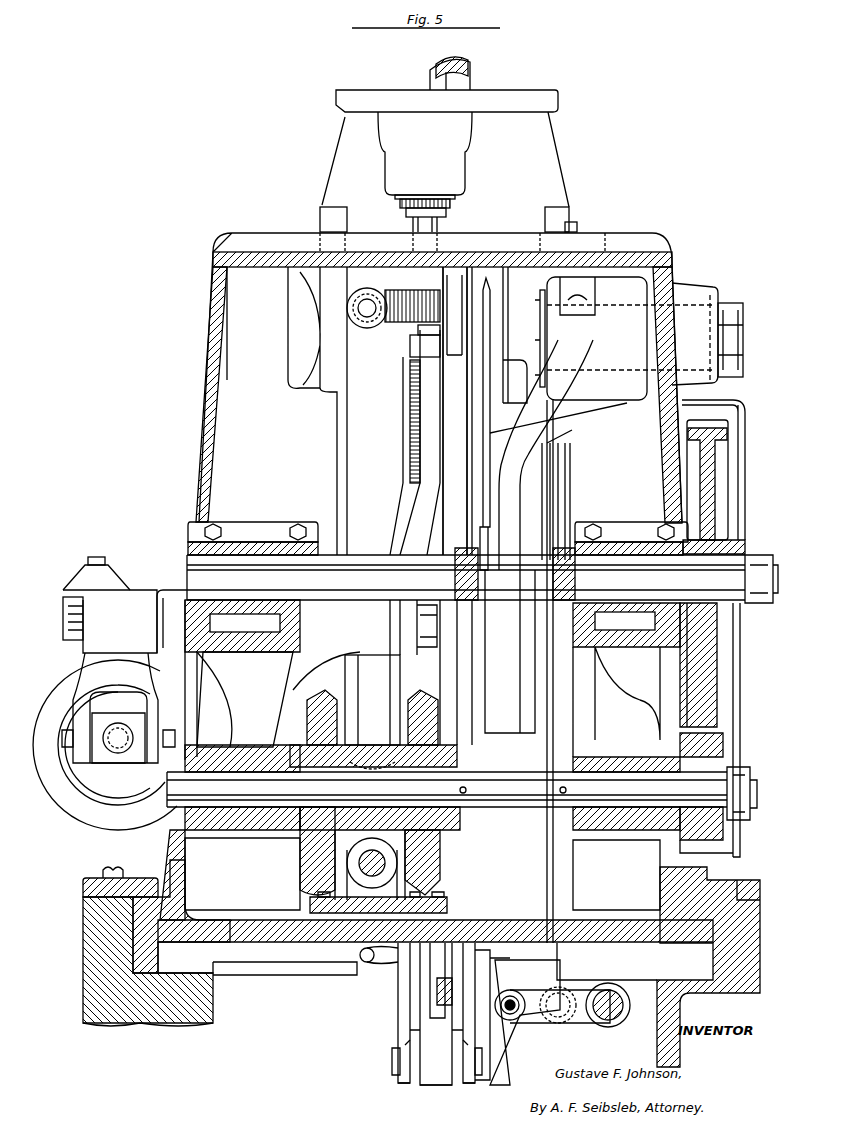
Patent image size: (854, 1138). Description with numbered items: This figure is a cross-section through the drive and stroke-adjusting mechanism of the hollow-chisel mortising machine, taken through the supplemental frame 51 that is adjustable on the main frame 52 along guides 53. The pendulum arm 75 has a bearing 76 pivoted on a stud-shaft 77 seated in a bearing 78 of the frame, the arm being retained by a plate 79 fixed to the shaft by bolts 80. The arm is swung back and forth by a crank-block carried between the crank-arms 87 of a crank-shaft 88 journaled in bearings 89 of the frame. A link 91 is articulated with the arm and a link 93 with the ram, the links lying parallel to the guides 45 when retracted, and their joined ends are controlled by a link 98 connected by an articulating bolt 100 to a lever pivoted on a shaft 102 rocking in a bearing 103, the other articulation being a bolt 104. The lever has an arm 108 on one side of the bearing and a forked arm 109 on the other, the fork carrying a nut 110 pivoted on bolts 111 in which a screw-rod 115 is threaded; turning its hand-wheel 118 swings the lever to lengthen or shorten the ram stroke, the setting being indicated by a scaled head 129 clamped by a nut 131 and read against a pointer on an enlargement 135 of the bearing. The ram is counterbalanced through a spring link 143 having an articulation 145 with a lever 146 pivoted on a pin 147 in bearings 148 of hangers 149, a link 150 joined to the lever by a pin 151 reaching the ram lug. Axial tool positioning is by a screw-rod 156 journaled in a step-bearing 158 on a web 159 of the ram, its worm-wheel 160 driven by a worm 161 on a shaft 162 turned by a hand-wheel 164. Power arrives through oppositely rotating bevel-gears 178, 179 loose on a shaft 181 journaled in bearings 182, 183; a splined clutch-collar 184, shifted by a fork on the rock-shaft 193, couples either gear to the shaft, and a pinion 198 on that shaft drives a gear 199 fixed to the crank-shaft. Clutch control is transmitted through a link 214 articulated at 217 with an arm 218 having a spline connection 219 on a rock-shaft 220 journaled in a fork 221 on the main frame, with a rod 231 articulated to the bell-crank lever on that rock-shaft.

The guides 45 is at (325, 218).
The supplemental frame 51 is at (674, 262).
The main frame 52 is at (83, 978).
The guides 53 is at (186, 975).
The arm 75 is at (508, 487).
The bearing 76 is at (634, 385).
The stud-shaft 77 is at (745, 332).
The bearing 78 is at (698, 290).
The plate 79 is at (540, 335).
The bolts 80 is at (538, 360).
The crank-arms 87 is at (462, 548).
The crank-shaft 88 is at (386, 563).
The bearings 89 is at (283, 540).
The link 91 is at (503, 406).
The link 93 is at (475, 432).
The link 98 is at (450, 362).
The articulating bolt 100 is at (425, 285).
The shaft 102 is at (63, 627).
The bearing 103 is at (172, 600).
The articulating bolt 104 is at (415, 350).
The arm 108 is at (420, 465).
The arm 109 is at (84, 666).
The nut 110 is at (107, 750).
The bolts 111 is at (60, 742).
The screw-rod 115 is at (128, 752).
The hand-wheel 118 is at (80, 822).
The head 129 is at (90, 582).
The nut 131 is at (105, 561).
The enlargement 135 is at (63, 605).
The link 143 is at (430, 1012).
The articulation 145 is at (415, 988).
The lever 146 is at (436, 1085).
The pin 147 is at (392, 1063).
The bearings 148 is at (405, 1083).
The hangers 149 is at (405, 1036).
The link 150 is at (405, 883).
The pin 151 is at (447, 913).
The screw-rod 156 is at (408, 405).
The step-bearing 158 is at (450, 209).
The web 159 is at (455, 172).
The worm-wheel 160 is at (418, 332).
The worm 161 is at (360, 312).
The shaft 162 is at (380, 278).
The hand-wheel 164 is at (300, 370).
The bevel-gear 178 is at (400, 865).
The bevel-gear 179 is at (300, 850).
The shaft 181 is at (528, 805).
The bearing 182 is at (616, 840).
The bearing 183 is at (232, 830).
The clutch-collar 184 is at (372, 735).
The rock-shaft 193 is at (320, 892).
The pinion 198 is at (723, 750).
The gear 199 is at (725, 690).
The link 214 is at (510, 1062).
The articulation 217 is at (527, 980).
The arm 218 is at (548, 1020).
The spline-key and groove connection 219 is at (585, 1023).
The rock-shaft 220 is at (608, 1027).
The fork 221 is at (640, 985).
The rod 231 is at (575, 490).